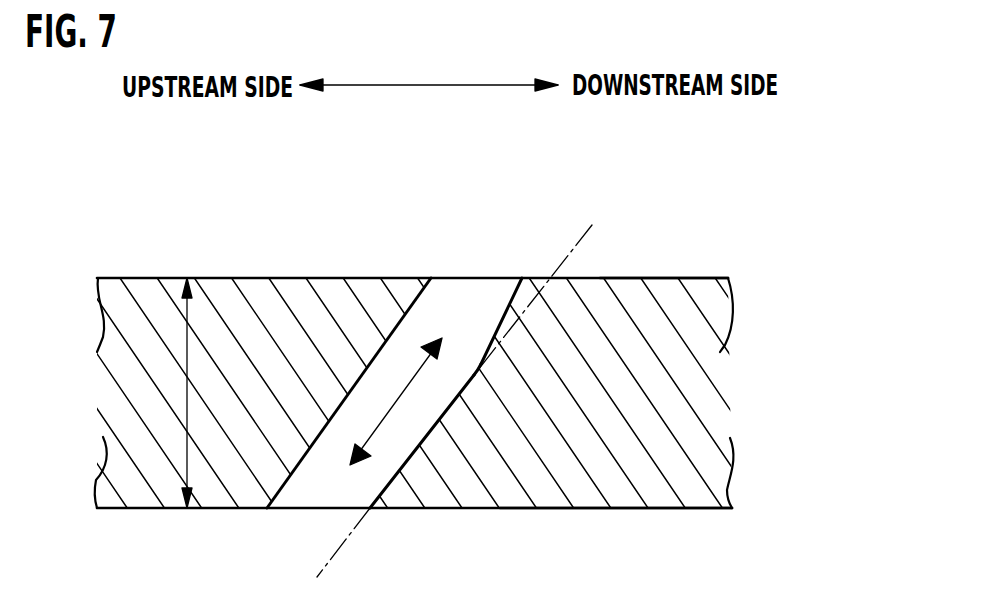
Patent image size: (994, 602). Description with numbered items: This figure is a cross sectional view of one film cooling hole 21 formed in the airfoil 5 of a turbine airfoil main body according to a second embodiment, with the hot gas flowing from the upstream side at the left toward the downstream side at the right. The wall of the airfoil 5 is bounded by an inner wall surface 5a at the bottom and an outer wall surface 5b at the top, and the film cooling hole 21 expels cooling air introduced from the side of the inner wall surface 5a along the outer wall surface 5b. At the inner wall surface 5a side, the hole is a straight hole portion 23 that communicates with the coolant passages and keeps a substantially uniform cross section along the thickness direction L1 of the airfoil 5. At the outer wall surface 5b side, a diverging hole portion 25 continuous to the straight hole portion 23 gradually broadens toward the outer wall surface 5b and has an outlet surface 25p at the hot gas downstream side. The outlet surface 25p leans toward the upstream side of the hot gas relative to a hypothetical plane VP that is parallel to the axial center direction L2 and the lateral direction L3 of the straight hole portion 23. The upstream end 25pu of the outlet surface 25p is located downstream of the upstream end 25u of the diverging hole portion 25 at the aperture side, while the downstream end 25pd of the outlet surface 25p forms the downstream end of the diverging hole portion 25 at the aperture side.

The airfoil 5 is at (158, 268).
The inner wall surface 5a is at (577, 509).
The outer wall surface 5b is at (707, 277).
The film cooling hole 21 is at (392, 326).
The straight hole portion 23 is at (327, 422).
The diverging hole portion 25 is at (397, 325).
The upstream end of the diverging hole portion 25u is at (419, 293).
The downstream end of the outlet surface 25pd is at (513, 277).
The outlet surface 25p is at (503, 318).
The upstream end of the outlet surface 25pu is at (478, 370).
The thickness direction L1 is at (187, 448).
The axial center direction L2 is at (388, 410).
The lateral direction L3 is at (480, 368).
The hypothetical plane VP is at (577, 243).